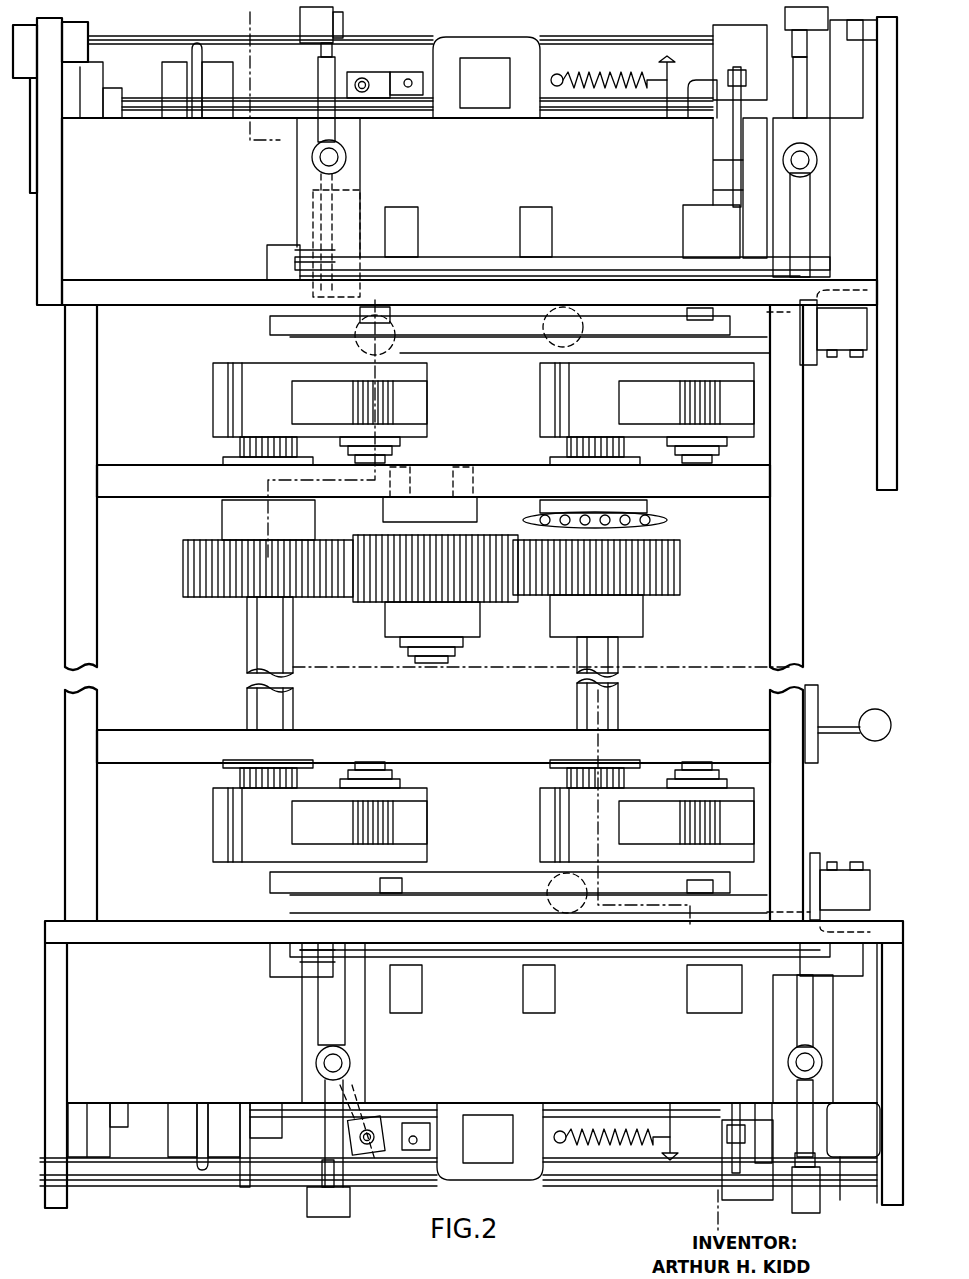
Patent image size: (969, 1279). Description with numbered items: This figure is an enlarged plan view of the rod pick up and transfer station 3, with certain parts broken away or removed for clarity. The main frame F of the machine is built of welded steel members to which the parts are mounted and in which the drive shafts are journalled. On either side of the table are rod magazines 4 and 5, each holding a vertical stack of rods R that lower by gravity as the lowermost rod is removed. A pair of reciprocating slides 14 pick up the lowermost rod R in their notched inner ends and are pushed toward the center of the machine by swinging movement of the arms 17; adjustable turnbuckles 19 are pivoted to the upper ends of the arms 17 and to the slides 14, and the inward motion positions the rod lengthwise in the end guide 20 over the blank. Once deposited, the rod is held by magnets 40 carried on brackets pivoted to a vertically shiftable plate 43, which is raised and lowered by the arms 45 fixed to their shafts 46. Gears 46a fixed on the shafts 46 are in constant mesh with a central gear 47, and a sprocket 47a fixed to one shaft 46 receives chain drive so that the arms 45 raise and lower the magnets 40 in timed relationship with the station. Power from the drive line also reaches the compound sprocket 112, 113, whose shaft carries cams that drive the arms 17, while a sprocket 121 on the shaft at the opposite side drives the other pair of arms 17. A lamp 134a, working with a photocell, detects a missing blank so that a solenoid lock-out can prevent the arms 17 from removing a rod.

The rod pick up and transfer station 3 is at (249, 1243).
The rod magazine 4 is at (255, 259).
The rod magazine 5 is at (238, 16).
The reciprocating slide 14 is at (340, 185).
The arm 17 is at (300, 60).
The adjustable turnbuckle 19 is at (808, 147).
The end guide 20 is at (813, 363).
The magnet 40 is at (582, 908).
The vertically shiftable plate 43 is at (478, 322).
The arm 45 is at (425, 372).
The shaft 46 is at (240, 447).
The gear 46a is at (186, 574).
The central gear 47 is at (366, 600).
The sprocket 47a is at (668, 519).
The compound sprocket 112 is at (245, 1190).
The compound sprocket 113 is at (202, 1172).
The sprocket 121 is at (197, 112).
The lamp 134a is at (870, 736).
The main frame F is at (795, 603).
The rod R is at (487, 262).